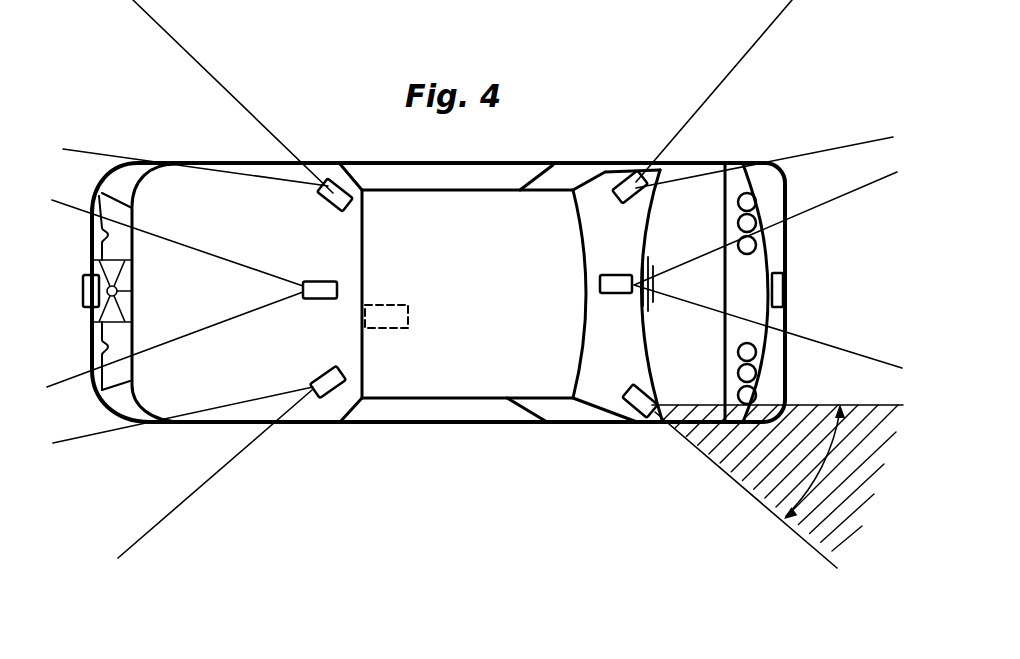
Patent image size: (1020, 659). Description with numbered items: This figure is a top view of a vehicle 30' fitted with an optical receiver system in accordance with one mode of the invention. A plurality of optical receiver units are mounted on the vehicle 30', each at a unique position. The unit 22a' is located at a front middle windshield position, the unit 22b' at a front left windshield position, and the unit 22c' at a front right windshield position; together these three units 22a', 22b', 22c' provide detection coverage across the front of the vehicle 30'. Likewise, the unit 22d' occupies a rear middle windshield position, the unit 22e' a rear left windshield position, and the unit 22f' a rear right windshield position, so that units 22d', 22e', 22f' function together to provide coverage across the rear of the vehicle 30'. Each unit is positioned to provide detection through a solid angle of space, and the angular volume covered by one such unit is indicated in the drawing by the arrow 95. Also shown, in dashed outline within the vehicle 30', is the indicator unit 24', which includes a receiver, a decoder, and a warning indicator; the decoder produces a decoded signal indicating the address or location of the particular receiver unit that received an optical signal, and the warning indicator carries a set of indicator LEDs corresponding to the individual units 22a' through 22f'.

The vehicle 30' is at (434, 252).
The optical receiver unit 22a' is at (229, 293).
The optical receiver unit 22b' is at (234, 456).
The optical receiver unit 22c' is at (237, 113).
The optical receiver unit 22d' is at (713, 270).
The optical receiver unit 22e' is at (710, 462).
The optical receiver unit 22f' is at (710, 114).
The indicator unit 24' is at (407, 318).
The arrow indicating angular volume 95 is at (825, 473).